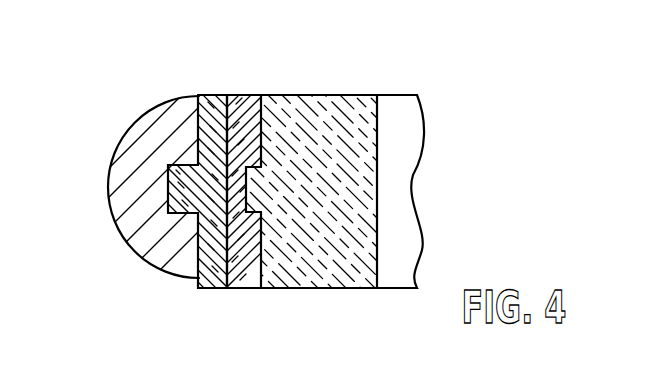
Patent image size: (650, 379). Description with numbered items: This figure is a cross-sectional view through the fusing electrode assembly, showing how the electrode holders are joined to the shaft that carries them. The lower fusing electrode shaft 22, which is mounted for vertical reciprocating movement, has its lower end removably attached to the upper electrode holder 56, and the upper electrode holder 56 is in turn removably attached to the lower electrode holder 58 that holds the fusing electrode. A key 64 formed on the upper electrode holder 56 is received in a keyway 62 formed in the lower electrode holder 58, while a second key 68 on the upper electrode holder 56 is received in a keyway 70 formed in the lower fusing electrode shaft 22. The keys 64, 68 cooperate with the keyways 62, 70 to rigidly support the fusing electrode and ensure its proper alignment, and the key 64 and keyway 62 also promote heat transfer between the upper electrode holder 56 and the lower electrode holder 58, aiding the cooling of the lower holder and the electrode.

The lower fusing electrode shaft 22 is at (137, 257).
The upper electrode holder 56 is at (207, 94).
The lower electrode holder 58 is at (252, 98).
The keyway 62 is at (238, 213).
The key 64 is at (250, 195).
The key 68 is at (168, 214).
The keyway 70 is at (168, 188).